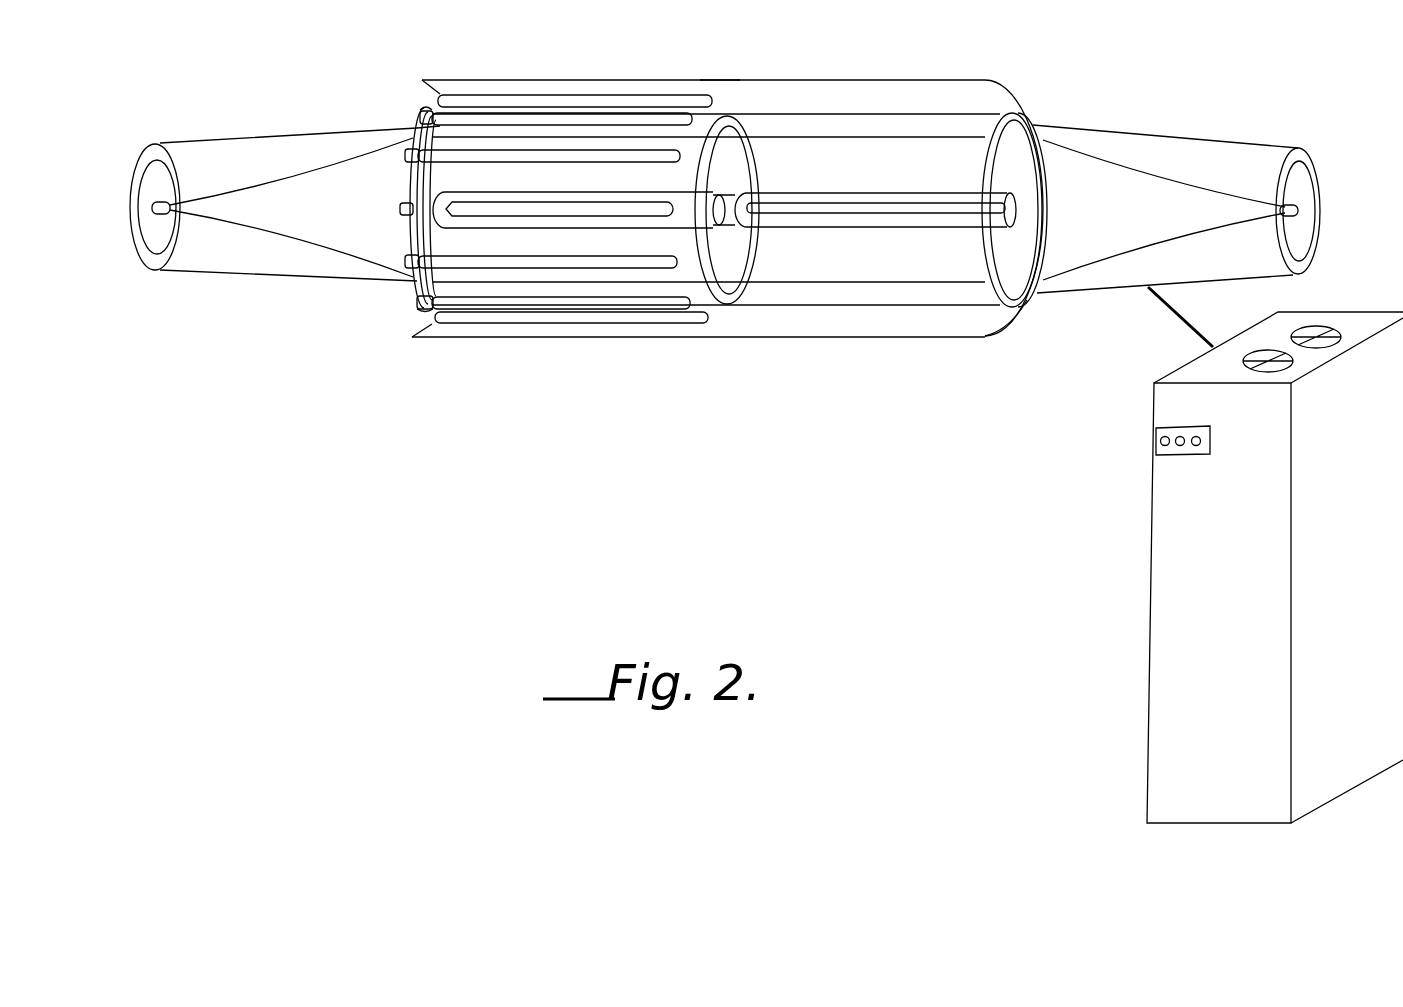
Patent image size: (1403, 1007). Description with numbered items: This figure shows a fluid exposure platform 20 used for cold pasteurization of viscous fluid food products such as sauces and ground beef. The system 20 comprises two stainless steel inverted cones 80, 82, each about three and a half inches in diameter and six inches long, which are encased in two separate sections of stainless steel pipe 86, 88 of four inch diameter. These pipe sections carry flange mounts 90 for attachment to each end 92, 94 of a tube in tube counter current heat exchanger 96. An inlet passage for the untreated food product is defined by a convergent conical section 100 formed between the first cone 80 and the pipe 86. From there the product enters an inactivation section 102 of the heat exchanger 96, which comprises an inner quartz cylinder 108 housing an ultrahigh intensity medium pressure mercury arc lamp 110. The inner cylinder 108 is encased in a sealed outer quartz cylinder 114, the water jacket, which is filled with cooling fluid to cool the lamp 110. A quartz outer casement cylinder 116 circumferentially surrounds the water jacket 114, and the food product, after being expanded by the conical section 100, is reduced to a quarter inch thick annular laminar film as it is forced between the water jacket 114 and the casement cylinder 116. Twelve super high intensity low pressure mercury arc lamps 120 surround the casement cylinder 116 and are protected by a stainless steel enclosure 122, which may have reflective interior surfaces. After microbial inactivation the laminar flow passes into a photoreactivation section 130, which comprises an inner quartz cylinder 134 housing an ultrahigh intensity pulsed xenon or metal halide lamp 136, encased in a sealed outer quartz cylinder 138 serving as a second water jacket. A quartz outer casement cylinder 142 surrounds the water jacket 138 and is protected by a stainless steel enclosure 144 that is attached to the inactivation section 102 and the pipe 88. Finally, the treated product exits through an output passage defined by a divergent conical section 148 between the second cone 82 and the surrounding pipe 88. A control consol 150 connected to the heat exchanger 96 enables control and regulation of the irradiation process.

The fluid exposure platform 20 is at (405, 70).
The first cone 80 is at (277, 227).
The second cone 82 is at (1173, 240).
The stainless steel pipe 86 is at (233, 137).
The stainless steel pipe 88 is at (1220, 142).
The flange mounts 90 is at (423, 312).
The end of heat exchanger 92 is at (450, 343).
The end of heat exchanger 94 is at (1005, 333).
The tube in tube counter current heat exchanger 96 is at (707, 340).
The convergent conical section 100 is at (152, 172).
The inactivation section 102 is at (635, 80).
The inner quartz cylinder 108 is at (413, 195).
The ultrahigh intensity medium pressure mercury arc lamp 110 is at (435, 225).
The sealed outer quartz cylinder 114 is at (418, 128).
The quartz outer casement cylinder 116 is at (427, 118).
The super high intensity low pressure mercury arc lamps 120 is at (558, 98).
The stainless steel NEMA ISO 9002 enclosure 122 is at (430, 328).
The photoreactivation section 130 is at (847, 80).
The inner quartz cylinder 134 is at (1020, 205).
The ultrahigh intensity pulsed xenon or metal halide lamp 136 is at (1005, 227).
The sealed outer quartz cylinder 138 is at (1043, 153).
The quartz outer casement cylinder 142 is at (910, 112).
The stainless steel NEMA ISO 9002 enclosure 144 is at (718, 78).
The divergent conical section 148 is at (1303, 182).
The control consol 150 is at (1140, 540).